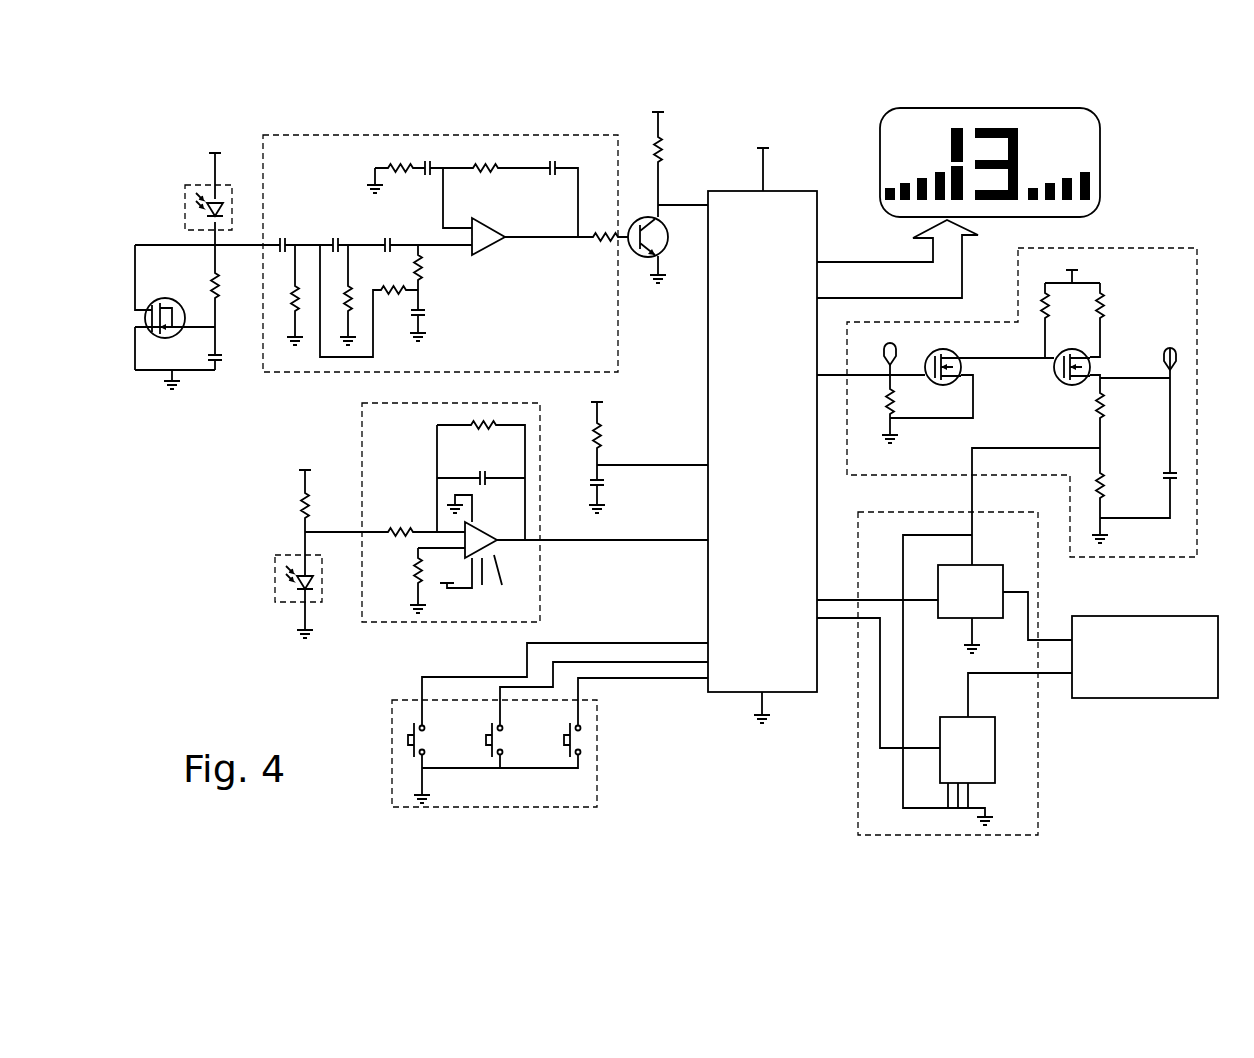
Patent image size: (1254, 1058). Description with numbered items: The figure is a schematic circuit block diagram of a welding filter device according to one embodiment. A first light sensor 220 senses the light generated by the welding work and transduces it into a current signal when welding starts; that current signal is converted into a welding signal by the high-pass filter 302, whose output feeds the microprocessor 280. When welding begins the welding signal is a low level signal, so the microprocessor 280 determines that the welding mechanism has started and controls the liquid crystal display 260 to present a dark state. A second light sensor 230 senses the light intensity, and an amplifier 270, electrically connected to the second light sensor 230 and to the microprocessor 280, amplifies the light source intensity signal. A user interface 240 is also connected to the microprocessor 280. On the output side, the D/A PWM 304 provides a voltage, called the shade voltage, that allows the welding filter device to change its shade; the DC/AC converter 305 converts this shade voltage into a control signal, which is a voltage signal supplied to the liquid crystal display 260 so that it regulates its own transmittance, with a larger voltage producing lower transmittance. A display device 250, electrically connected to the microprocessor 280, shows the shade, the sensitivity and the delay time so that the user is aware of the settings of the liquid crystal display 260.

The first light sensor 220 is at (182, 213).
The second light sensor 230 is at (272, 586).
The user interface 240 is at (608, 774).
The display device 250 is at (1088, 148).
The liquid crystal display 260 is at (1162, 700).
The amplifier 270 is at (545, 602).
The microprocessor 280 is at (725, 695).
The high-pass filter 302 is at (488, 128).
The D/A PWM 304 is at (1140, 247).
The DC/AC converter 305 is at (1040, 764).